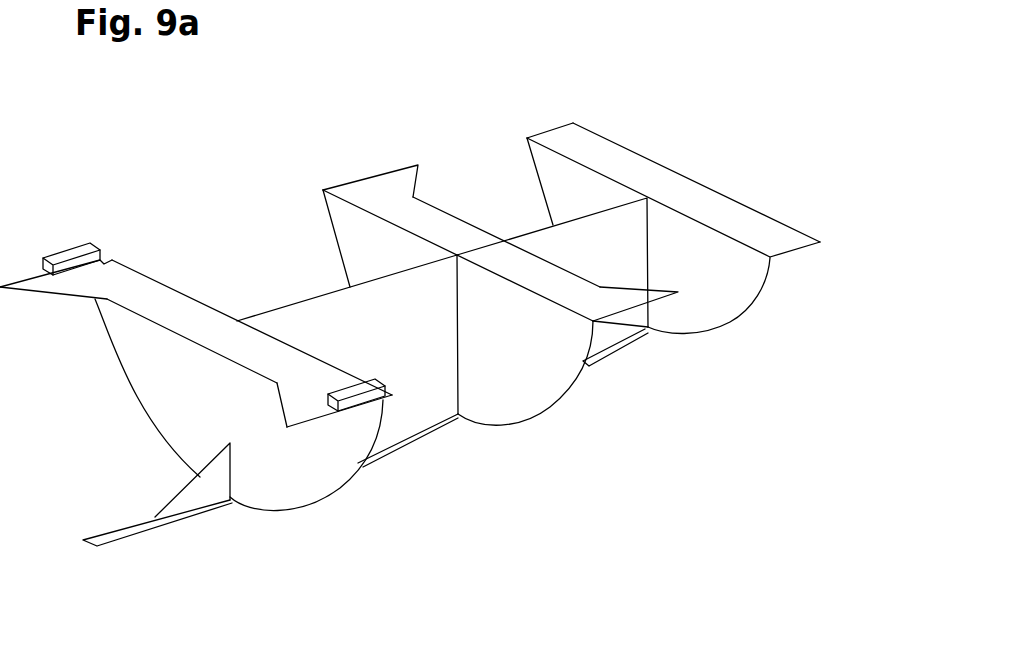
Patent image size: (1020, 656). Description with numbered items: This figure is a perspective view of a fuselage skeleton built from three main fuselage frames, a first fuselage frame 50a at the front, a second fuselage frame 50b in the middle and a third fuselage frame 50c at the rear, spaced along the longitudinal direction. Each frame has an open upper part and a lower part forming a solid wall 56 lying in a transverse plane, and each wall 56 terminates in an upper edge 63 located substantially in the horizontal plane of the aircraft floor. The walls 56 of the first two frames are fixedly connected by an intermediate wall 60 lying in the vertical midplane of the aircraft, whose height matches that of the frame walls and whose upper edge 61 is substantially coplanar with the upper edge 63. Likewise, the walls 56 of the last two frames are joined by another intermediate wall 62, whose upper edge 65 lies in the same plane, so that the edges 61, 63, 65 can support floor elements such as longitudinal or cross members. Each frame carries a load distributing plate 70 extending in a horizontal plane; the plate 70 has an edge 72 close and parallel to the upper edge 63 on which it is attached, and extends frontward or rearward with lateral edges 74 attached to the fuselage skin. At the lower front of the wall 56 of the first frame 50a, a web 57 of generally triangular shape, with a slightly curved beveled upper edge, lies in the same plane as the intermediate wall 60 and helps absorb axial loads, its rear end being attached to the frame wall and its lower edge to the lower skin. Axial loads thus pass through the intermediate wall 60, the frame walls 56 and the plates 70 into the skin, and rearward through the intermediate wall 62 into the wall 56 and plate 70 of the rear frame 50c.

The first fuselage frame 50a is at (337, 473).
The second fuselage frame 50b is at (527, 367).
The third fuselage frame 50c is at (718, 284).
The frame wall 56 is at (180, 413).
The web 57 is at (197, 495).
The intermediate wall 60 is at (415, 410).
The upper edge of intermediate wall 61 is at (325, 294).
The intermediate wall 62 is at (627, 320).
The upper edge of frame wall 63 is at (146, 278).
The upper edge of intermediate wall 65 is at (530, 228).
The load distributing plate 70 is at (167, 307).
The edge of load distributing plate 72 is at (207, 307).
The lateral edges of load distributing plate 74 is at (24, 276).